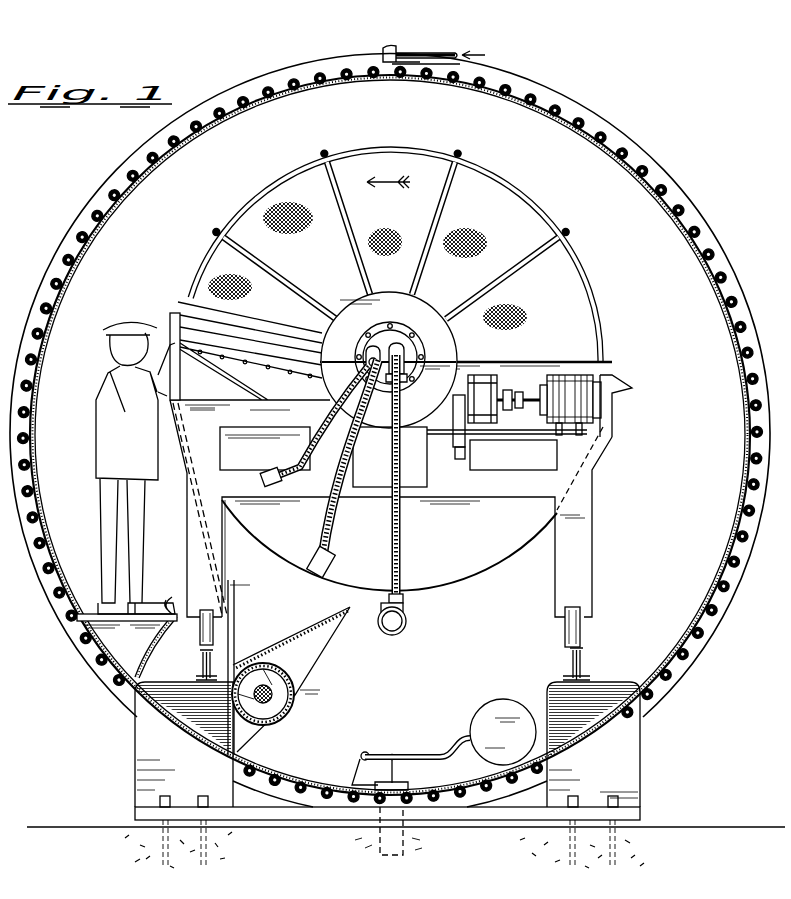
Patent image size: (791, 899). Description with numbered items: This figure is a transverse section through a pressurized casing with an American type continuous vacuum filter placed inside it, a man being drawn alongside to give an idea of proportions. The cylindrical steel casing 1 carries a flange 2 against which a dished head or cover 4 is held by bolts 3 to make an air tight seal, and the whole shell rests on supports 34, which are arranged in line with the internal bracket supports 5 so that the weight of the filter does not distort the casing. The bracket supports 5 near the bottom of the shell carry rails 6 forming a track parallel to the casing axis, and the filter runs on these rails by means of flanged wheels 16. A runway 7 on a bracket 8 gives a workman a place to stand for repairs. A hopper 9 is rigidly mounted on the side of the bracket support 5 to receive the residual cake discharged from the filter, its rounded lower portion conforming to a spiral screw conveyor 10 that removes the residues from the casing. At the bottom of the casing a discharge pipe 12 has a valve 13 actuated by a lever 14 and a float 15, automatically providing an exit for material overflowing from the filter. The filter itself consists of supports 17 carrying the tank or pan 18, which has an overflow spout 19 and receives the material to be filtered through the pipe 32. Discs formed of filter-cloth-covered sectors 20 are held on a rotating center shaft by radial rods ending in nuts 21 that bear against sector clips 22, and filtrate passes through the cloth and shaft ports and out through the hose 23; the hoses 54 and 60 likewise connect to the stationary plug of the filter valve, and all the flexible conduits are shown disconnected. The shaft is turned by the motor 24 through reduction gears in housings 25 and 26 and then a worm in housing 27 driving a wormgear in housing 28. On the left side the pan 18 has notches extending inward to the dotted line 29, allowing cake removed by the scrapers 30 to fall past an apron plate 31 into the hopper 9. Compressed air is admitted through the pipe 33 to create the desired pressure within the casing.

The cylindrical steel casing 1 is at (667, 197).
The flange 2 is at (655, 165).
The bolts 3 is at (607, 127).
The dished head or cover 4 is at (596, 203).
The bracket supports 5 is at (195, 682).
The rails 6 is at (200, 664).
The runway 7 is at (165, 597).
The bracket 8 is at (143, 646).
The hopper 9 is at (318, 660).
The spiral screw conveyor 10 is at (272, 696).
The discharge pipe 12 is at (405, 843).
The valve 13 is at (400, 781).
The lever 14 is at (436, 752).
The float 15 is at (484, 712).
The flanged wheels 16 is at (580, 622).
The supports 17 is at (190, 528).
The tank or pan 18 is at (487, 567).
The overflow spout 19 is at (633, 388).
The sectors 20 is at (390, 266).
The nuts 21 is at (460, 153).
The sector clips 22 is at (458, 162).
The hose 23 is at (340, 533).
The motor 24 is at (570, 402).
The gear housing 25 is at (483, 384).
The gear housing 26 is at (460, 458).
The worm housing 27 is at (417, 432).
The wormgear housing 28 is at (413, 403).
The dotted line 29 is at (338, 490).
The scrapers 30 is at (178, 302).
The apron plate 31 is at (217, 575).
The pipe 32 is at (406, 619).
The pipe 33 is at (443, 52).
The supports 34 is at (135, 758).
The hose 54 is at (401, 525).
The hose 60 is at (366, 376).